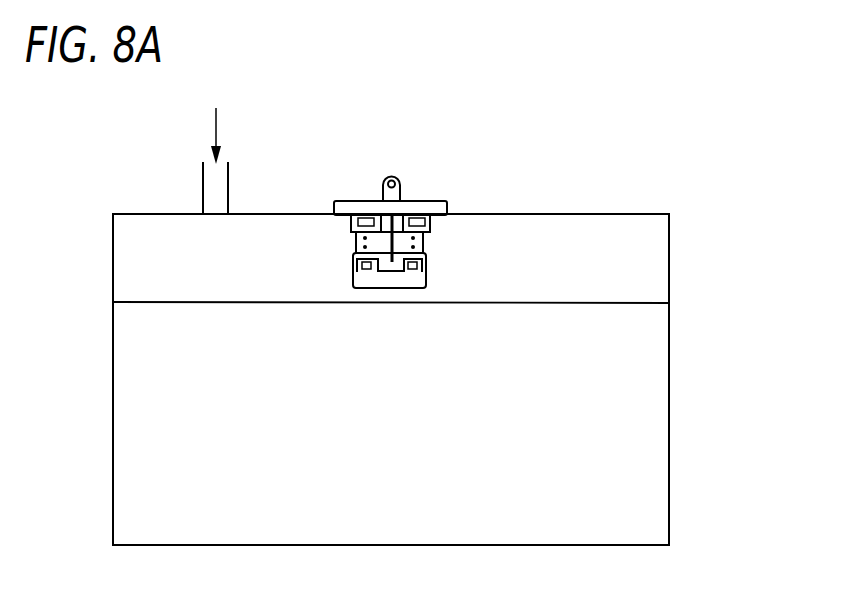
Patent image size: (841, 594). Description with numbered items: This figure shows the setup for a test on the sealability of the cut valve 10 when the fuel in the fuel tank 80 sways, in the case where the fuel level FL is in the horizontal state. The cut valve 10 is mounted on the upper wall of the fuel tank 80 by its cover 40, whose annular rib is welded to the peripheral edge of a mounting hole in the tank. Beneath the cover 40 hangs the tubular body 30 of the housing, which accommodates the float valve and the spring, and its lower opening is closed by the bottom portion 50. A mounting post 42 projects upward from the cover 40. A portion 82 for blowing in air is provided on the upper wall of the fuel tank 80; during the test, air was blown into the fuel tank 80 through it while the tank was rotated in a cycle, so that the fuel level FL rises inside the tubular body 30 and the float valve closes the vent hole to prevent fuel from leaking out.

The cut valve 10 is at (376, 236).
The tubular body 30 is at (428, 242).
The cover 40 is at (333, 200).
The mounting post 42 is at (388, 176).
The bottom portion 50 is at (400, 284).
The fuel tank 80 is at (604, 213).
The portion for blowing in air 82 is at (203, 187).
The fuel level FL is at (183, 302).